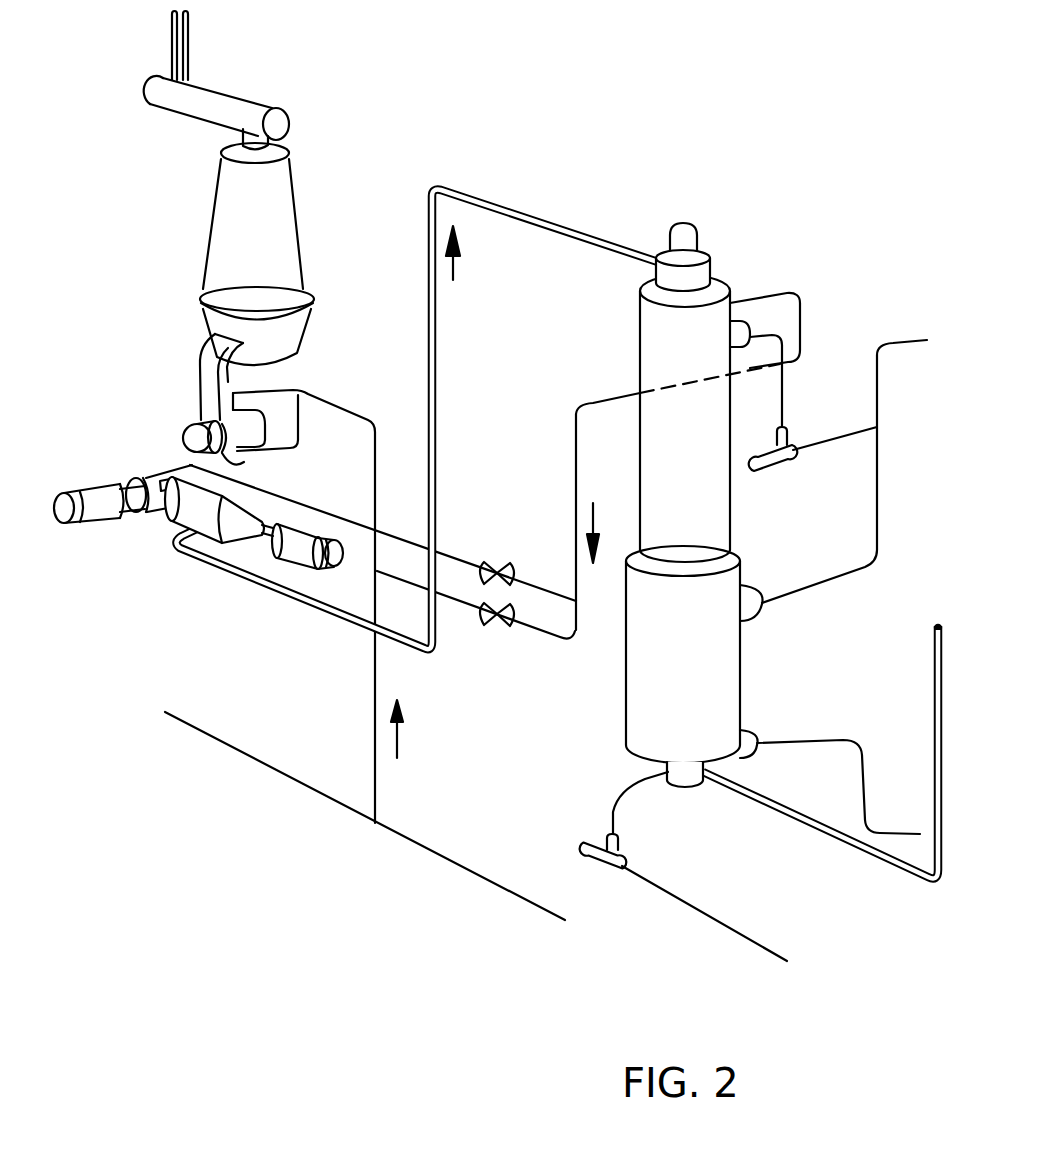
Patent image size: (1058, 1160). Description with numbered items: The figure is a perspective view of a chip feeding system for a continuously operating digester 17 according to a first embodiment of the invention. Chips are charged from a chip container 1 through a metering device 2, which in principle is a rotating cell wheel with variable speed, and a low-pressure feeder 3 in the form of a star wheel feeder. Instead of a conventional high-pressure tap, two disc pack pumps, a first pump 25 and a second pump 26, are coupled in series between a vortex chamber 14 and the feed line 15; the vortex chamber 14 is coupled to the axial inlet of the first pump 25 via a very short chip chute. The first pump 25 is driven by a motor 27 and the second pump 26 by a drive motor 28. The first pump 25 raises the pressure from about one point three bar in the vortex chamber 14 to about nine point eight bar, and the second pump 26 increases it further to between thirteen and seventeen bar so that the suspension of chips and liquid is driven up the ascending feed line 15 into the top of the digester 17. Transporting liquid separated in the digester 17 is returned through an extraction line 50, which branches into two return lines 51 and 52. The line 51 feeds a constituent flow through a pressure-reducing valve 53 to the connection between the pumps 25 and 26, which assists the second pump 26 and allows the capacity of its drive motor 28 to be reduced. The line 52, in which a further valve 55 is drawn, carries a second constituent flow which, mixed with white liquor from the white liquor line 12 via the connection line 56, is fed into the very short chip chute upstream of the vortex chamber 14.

The chip container 1 is at (284, 192).
The metering device 2 is at (197, 366).
The low-pressure feeder 3 is at (187, 426).
The white liquor line 12 is at (203, 733).
The vortex chamber 14 is at (252, 462).
The feed line 15 is at (436, 369).
The digester 17 is at (732, 521).
The first pump 25 is at (143, 472).
The second pump 26 is at (227, 541).
The motor 27 is at (92, 483).
The drive motor 28 is at (282, 560).
The extraction line 50 is at (574, 500).
The return line 51 is at (556, 590).
The return line 52 is at (545, 641).
The pressure-reducing valve 53 is at (491, 563).
The second valve 55 is at (505, 628).
The connection line 56 is at (375, 712).